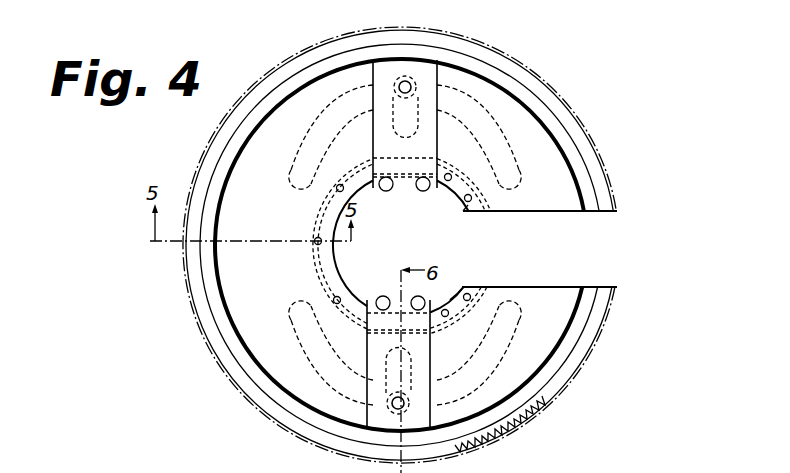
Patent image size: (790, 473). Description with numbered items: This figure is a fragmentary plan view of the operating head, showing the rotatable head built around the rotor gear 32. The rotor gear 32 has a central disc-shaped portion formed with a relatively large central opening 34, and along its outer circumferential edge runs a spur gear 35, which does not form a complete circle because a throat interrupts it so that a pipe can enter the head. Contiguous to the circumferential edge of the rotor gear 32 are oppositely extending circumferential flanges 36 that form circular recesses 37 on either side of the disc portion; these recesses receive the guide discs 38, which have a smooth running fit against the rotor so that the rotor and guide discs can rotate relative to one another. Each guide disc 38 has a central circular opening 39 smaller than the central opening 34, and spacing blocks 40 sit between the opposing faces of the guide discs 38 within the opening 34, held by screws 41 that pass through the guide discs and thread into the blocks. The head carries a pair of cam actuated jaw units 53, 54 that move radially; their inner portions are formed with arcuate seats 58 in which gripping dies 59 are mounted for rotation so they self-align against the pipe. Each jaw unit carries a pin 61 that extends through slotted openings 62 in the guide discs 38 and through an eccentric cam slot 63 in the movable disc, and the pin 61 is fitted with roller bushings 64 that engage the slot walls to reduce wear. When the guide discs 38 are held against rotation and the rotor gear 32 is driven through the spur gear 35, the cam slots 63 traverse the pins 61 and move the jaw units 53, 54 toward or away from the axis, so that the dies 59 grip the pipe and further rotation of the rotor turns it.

The rotor gear 32 is at (578, 180).
The central opening 34 is at (474, 210).
The spur gear 35 is at (522, 423).
The circumferential flanges 36 is at (220, 308).
The circular recesses 37 is at (205, 287).
The guide discs 38 is at (247, 327).
The central circular opening 39 is at (364, 190).
The spacing blocks 40 is at (316, 267).
The screws 41 is at (337, 190).
The cam actuated jaw unit 53 is at (435, 146).
The cam actuated jaw unit 54 is at (422, 352).
The arcuate seats 58 is at (447, 285).
The gripping die 59 is at (383, 296).
The pin 61 is at (412, 78).
The slotted openings 62 is at (366, 352).
The eccentric cam slot 63 is at (513, 152).
The roller bushings 64 is at (413, 95).